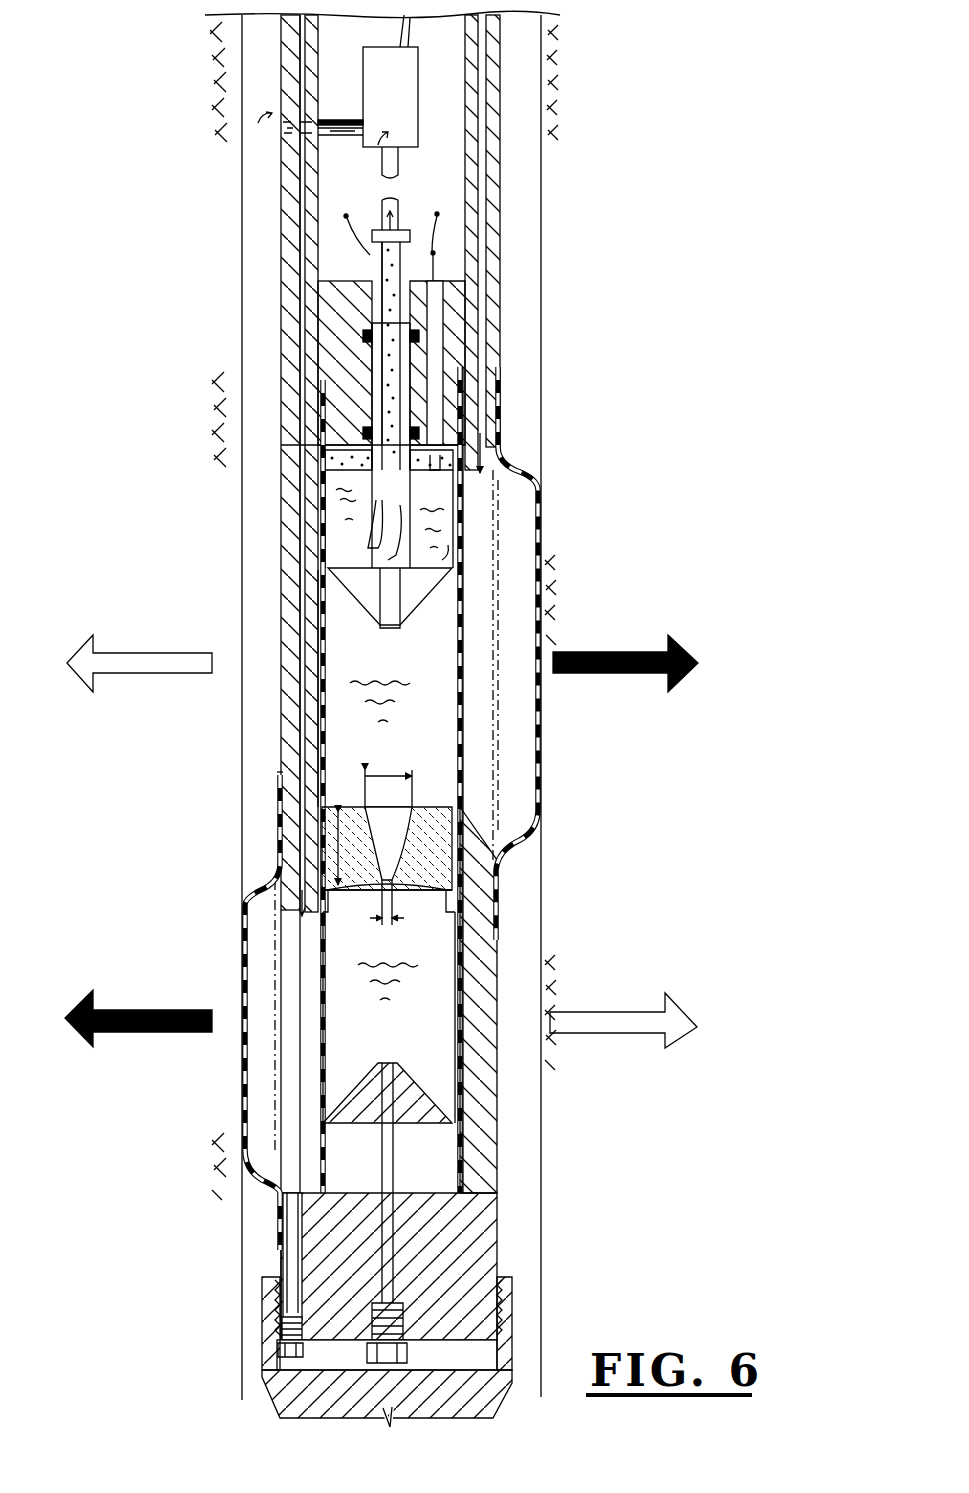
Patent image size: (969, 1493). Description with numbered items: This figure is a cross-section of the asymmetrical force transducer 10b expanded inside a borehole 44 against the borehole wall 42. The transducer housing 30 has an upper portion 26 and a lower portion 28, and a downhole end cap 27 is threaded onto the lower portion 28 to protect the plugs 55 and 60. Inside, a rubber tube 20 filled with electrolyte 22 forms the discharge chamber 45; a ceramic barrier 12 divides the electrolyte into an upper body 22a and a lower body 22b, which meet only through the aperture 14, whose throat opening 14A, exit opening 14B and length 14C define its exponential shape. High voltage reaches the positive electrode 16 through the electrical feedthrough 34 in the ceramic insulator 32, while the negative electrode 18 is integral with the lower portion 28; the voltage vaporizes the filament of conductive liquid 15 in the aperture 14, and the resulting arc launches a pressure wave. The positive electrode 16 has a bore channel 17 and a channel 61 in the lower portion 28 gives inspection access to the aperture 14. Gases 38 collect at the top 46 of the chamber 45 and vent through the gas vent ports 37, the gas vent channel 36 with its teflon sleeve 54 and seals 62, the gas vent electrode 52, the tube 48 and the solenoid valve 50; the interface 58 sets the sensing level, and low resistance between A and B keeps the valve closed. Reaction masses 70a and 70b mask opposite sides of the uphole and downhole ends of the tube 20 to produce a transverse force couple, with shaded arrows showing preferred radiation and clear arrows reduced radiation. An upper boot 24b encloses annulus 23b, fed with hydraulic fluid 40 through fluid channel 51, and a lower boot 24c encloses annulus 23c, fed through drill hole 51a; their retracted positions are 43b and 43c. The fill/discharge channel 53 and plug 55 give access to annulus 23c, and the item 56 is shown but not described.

The asymmetrical force transducer 10b is at (522, 368).
The ceramic barrier 12 is at (433, 815).
The aperture 14 is at (400, 834).
The throat opening 14A is at (395, 944).
The exit opening 14B is at (392, 772).
The aperture length 14C is at (346, 848).
The filament of conductive liquid 15 is at (393, 892).
The positive electrode 16 is at (418, 597).
The bore channel 17 is at (391, 622).
The negative electrode 18 is at (426, 1108).
The rubber tube 20 is at (460, 728).
The electrolyte 22 is at (432, 680).
The upper electrolyte body 22a is at (333, 752).
The lower electrolyte body 22b is at (408, 1018).
The upper annulus 23b is at (536, 642).
The lower annulus 23c is at (260, 1058).
The upper expandable rubber boot 24b is at (508, 848).
The lower expandable rubber boot 24c is at (272, 868).
The upper portion 26 is at (295, 407).
The downhole end cap 27 is at (490, 1413).
The lower portion 28 is at (475, 1224).
The transducer housing 30 is at (281, 296).
The ceramic insulator 32 is at (336, 290).
The electrical feedthrough 34 is at (438, 290).
The gas vent channel 36 is at (390, 385).
The gas vent ports 37 is at (383, 500).
The gases 38 is at (395, 290).
The hydraulic fluid 40 is at (525, 685).
The borehole wall 42 is at (541, 229).
The retracted position of boot 24b 43b is at (510, 515).
The retracted position of boot 24c 43c is at (273, 940).
The borehole 44 is at (537, 198).
The discharge chamber 45 is at (405, 676).
The top of electrolyte chamber 46 is at (427, 470).
The tube 48 is at (398, 208).
The solenoid valve 50 is at (405, 108).
The fluid channel 51 is at (480, 147).
The fluid channel or drill hole 51a is at (303, 178).
The gas vent electrode 52 is at (410, 252).
The hydraulic fluid fill/discharge channel 53 is at (290, 1297).
The teflon sleeve 54 is at (408, 362).
The plug 55 is at (303, 1352).
The annular passage 56 is at (323, 1008).
The interface 58 is at (380, 380).
The plug 60 is at (407, 1355).
The channel 61 is at (387, 1065).
The seals 62 is at (362, 337).
The upper reaction mass 70a is at (296, 597).
The lower reaction mass 70b is at (490, 1113).
The terminal A is at (437, 222).
The terminal B is at (352, 225).